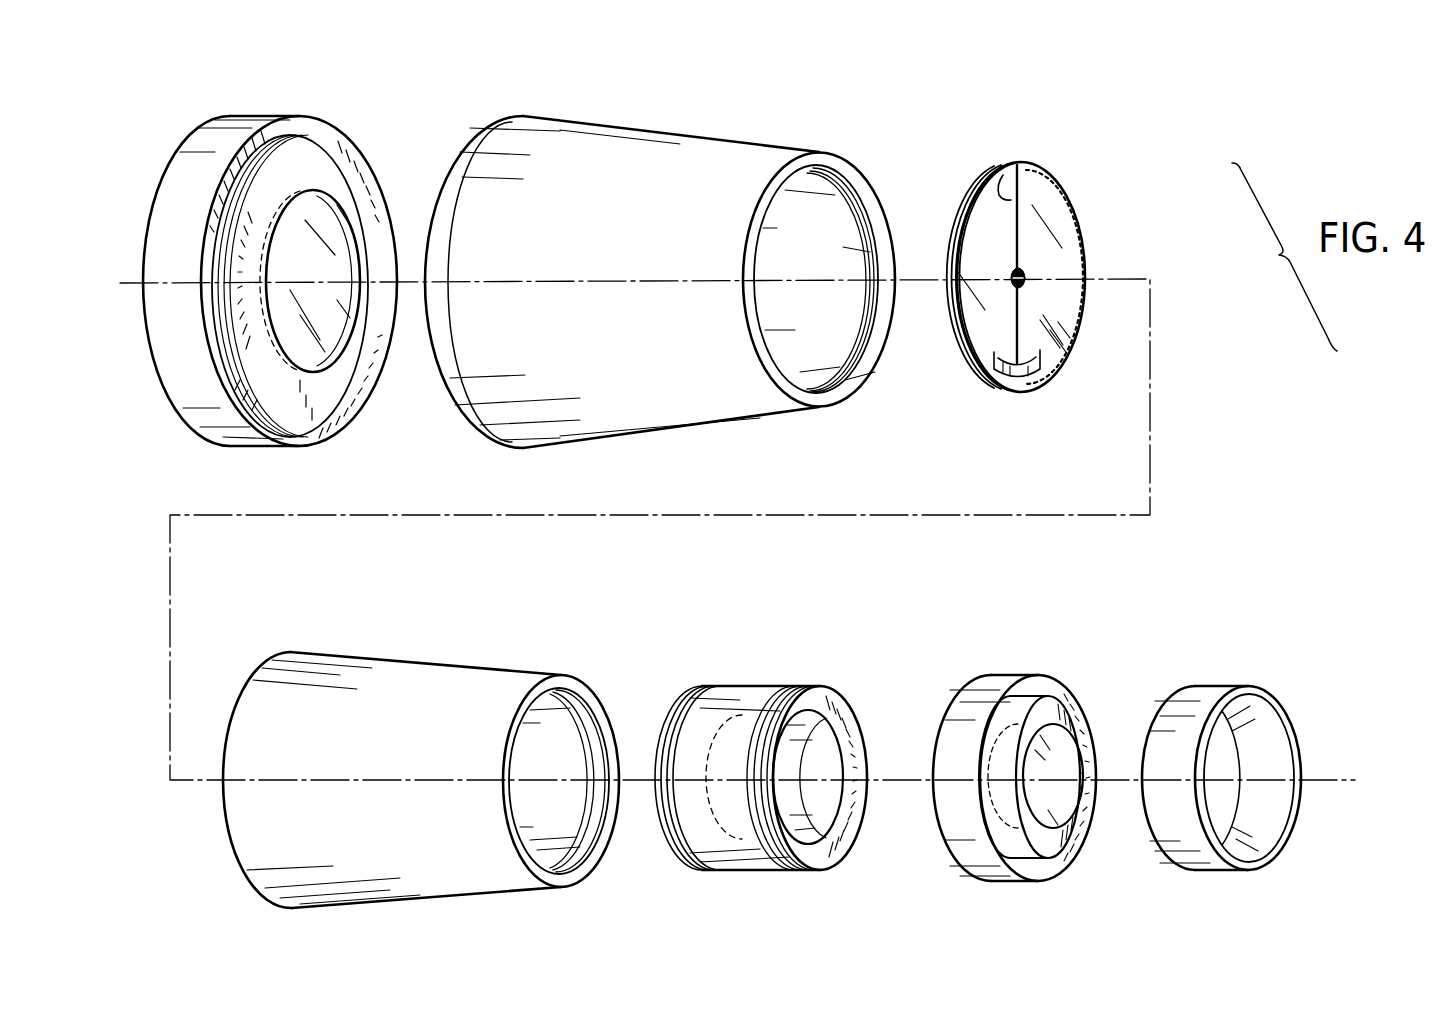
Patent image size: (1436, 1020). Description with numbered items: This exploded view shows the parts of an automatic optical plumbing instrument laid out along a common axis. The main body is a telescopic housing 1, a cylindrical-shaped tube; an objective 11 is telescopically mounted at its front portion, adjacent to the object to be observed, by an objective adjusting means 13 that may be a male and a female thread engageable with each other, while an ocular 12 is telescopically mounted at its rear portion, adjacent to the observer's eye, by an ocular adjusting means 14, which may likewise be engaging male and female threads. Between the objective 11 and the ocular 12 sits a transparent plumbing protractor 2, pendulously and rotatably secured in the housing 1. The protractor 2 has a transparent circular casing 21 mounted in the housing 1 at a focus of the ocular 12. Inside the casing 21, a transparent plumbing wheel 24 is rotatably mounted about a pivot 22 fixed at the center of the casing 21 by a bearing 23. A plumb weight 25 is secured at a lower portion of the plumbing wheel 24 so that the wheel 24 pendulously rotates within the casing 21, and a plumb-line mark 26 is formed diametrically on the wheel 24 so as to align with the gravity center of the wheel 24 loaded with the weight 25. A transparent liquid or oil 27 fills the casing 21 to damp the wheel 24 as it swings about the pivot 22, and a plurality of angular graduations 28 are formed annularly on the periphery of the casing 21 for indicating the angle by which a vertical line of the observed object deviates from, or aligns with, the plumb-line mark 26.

The telescopic housing 1 is at (667, 128).
The transparent plumbing protractor 2 is at (1067, 276).
The objective 11 is at (322, 236).
The ocular 12 is at (1042, 655).
The objective adjusting means 13 is at (258, 160).
The ocular adjusting means 14 is at (953, 856).
The transparent circular casing 21 is at (951, 186).
The pivot 22 is at (1026, 277).
The bearing 23 is at (1022, 272).
The transparent plumbing wheel 24 is at (1058, 371).
The plumb weight 25 is at (1004, 388).
The plumb-line mark 26 is at (1003, 176).
The transparent liquid or oil 27 is at (1065, 291).
The angular graduations 28 is at (1021, 162).